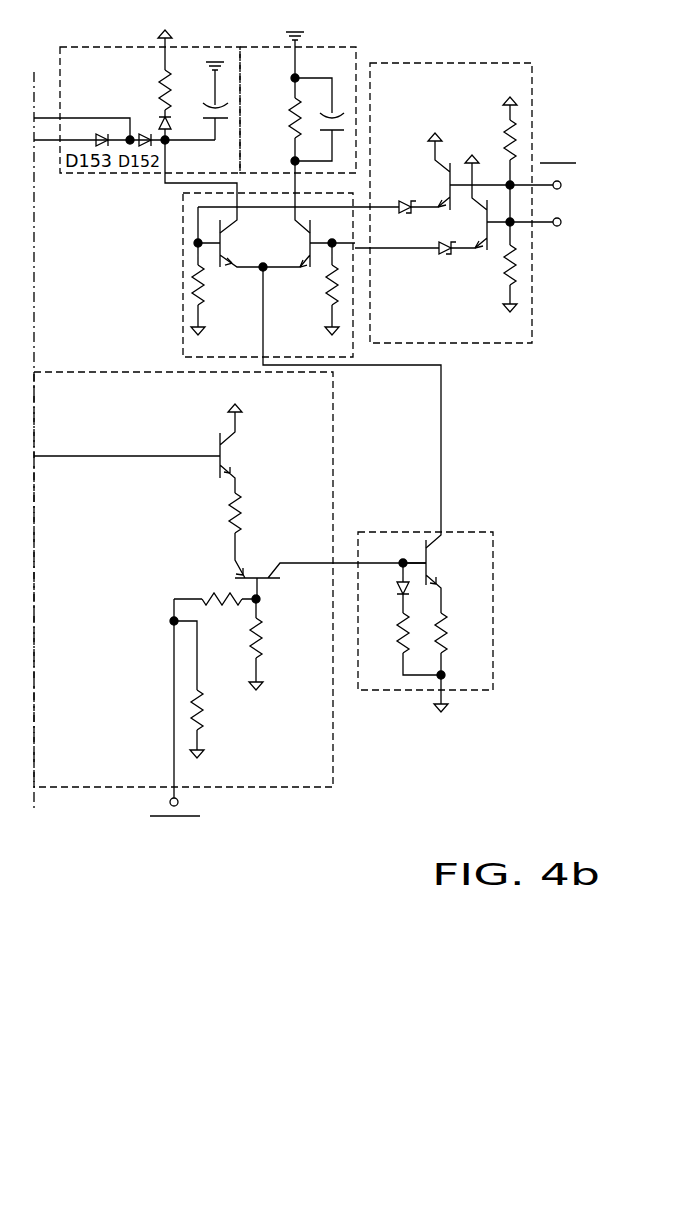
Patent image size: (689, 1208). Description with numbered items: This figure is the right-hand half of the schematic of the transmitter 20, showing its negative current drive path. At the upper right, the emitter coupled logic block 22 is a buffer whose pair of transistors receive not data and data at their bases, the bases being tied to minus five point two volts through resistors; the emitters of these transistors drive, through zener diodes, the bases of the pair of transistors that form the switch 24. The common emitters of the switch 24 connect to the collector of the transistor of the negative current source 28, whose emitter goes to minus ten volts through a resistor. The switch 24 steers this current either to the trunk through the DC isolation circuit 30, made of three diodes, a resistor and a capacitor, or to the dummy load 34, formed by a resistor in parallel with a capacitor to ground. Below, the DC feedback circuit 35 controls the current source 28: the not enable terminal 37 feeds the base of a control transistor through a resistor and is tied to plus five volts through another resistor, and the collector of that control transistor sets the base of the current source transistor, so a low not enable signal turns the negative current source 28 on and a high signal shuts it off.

The transmitter 20 is at (496, 476).
The emitter coupled logic block (buffer) 22 is at (480, 62).
The switch 24 is at (182, 306).
The negative current source 28 is at (404, 693).
The DC isolation circuit 30 is at (195, 45).
The dummy load 34 is at (322, 46).
The DC feedback circuit 35 is at (261, 791).
The not enable terminal 37 is at (180, 800).